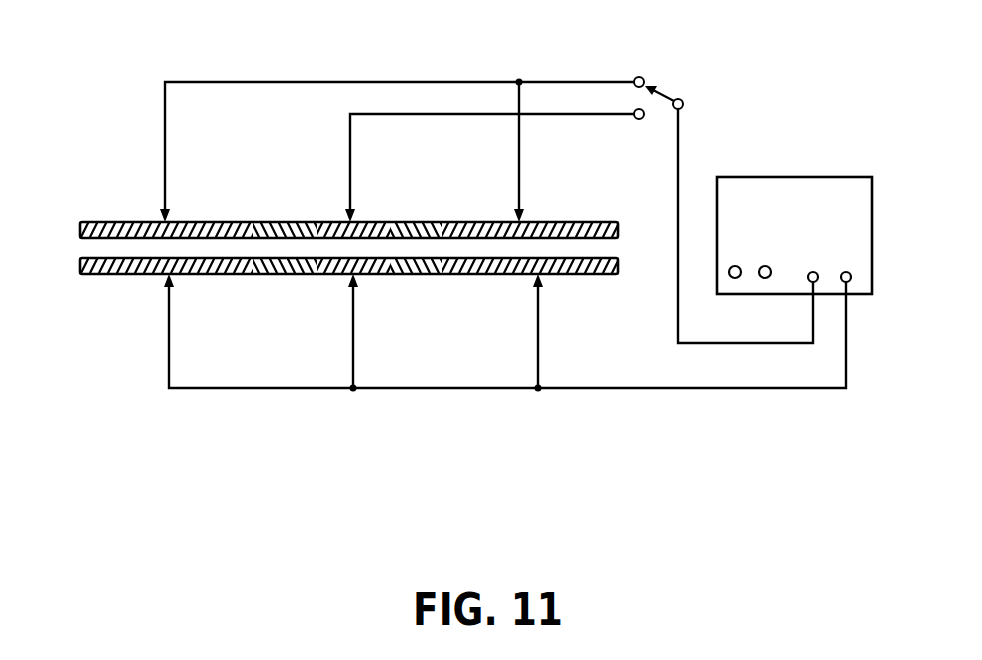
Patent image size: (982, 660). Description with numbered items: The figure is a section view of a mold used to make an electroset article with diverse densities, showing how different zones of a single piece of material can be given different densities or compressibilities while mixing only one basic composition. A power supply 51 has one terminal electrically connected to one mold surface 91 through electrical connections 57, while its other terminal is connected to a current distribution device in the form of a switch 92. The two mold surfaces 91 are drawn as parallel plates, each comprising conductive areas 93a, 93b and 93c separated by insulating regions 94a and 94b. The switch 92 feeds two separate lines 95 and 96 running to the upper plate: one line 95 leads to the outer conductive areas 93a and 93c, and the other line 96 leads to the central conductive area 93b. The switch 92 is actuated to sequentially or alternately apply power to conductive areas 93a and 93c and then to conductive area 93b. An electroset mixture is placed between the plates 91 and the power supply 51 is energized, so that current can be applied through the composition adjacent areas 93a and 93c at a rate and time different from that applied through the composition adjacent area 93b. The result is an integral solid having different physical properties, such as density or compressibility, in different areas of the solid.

The power supply 51 is at (773, 172).
The electrical connections 57 is at (600, 396).
The mold surface 91 is at (74, 216).
The switch 92 is at (687, 97).
The conductive area 93a is at (198, 219).
The conductive area 93b is at (368, 219).
The conductive area 93c is at (558, 219).
The insulating region 94a is at (283, 219).
The insulating region 94b is at (428, 219).
The first supply wire 95 is at (352, 75).
The second supply wire 96 is at (447, 118).